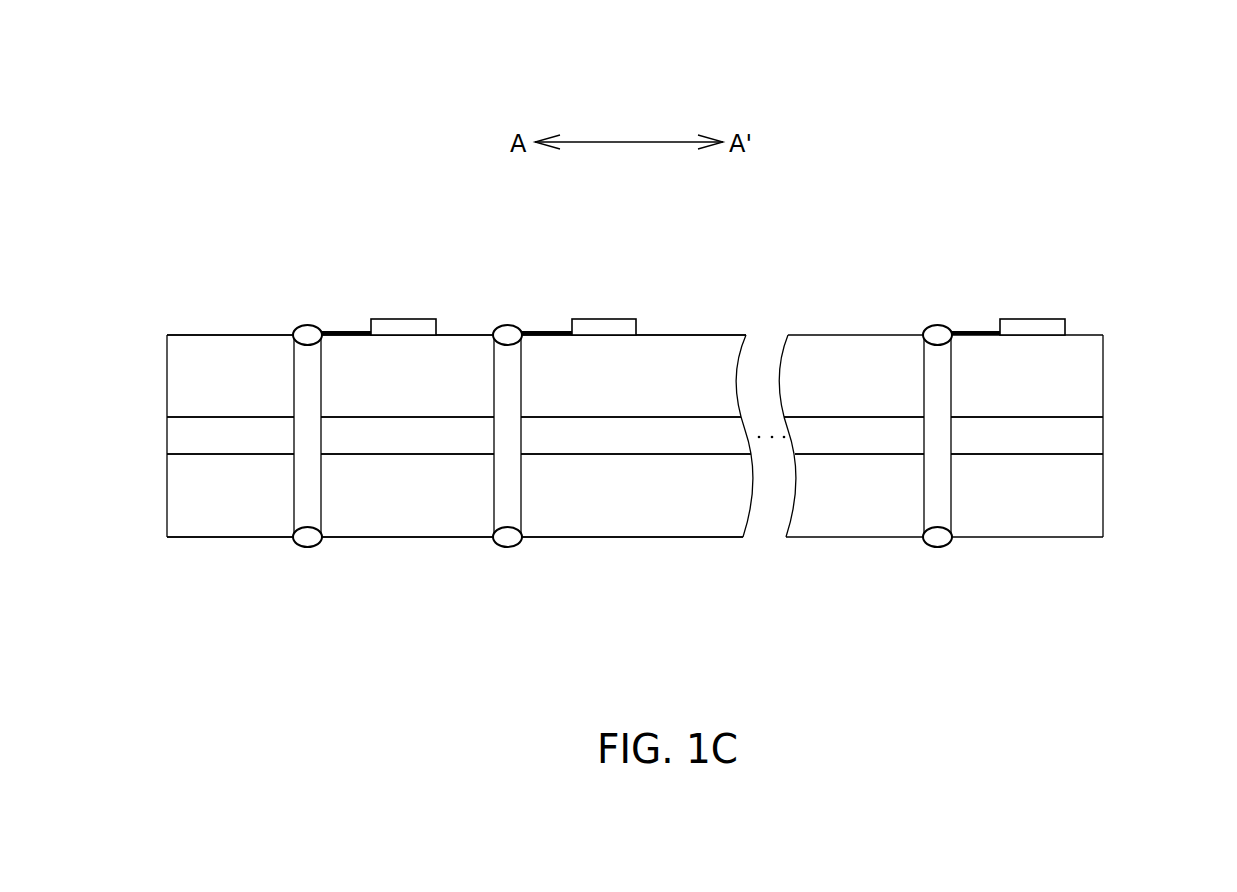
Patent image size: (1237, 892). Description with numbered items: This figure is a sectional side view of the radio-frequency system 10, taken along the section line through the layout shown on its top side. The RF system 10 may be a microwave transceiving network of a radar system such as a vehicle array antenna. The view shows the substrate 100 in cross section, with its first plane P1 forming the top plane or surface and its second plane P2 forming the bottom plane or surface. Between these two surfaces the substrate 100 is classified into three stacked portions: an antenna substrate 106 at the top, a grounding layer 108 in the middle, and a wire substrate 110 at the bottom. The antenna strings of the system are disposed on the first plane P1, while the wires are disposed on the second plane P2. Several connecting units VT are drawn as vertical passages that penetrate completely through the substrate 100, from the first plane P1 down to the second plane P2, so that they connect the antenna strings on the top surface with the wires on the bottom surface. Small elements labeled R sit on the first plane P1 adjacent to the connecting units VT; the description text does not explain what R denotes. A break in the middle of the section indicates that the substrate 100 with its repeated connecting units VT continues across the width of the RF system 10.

The radio-frequency system 10 is at (1093, 133).
The substrate 100 is at (701, 436).
The antenna substrate 106 is at (1085, 383).
The grounding layer 108 is at (1085, 441).
The wire substrate 110 is at (671, 495).
The first plane P1 is at (213, 333).
The second plane P2 is at (211, 540).
The connecting unit VT is at (308, 332).
The resistor R is at (401, 327).